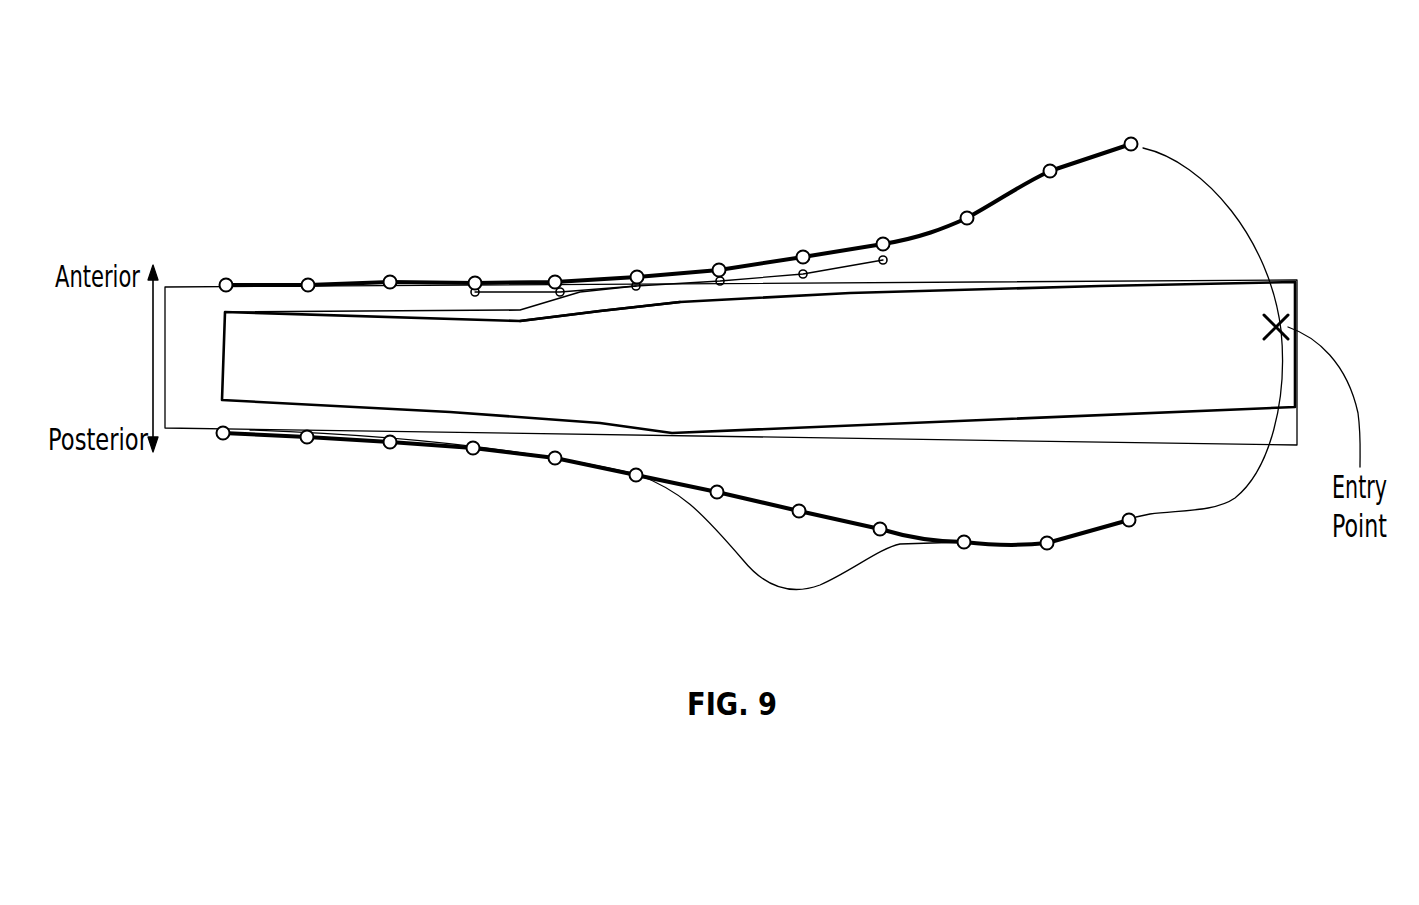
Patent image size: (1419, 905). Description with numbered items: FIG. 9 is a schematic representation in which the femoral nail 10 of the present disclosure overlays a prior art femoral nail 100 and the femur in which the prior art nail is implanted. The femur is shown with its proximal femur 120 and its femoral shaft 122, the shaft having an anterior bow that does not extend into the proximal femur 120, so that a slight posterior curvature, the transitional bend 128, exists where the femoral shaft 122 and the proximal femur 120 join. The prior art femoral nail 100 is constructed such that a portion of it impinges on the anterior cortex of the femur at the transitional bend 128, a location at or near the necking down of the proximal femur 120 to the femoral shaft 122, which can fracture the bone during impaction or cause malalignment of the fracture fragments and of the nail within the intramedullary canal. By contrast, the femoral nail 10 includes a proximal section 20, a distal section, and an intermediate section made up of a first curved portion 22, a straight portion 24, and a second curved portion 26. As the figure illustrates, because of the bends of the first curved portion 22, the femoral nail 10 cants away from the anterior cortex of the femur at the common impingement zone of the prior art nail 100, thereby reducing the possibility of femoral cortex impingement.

The femoral nail 10 is at (976, 436).
The proximal section 20 is at (1040, 288).
The first curved portion 22 is at (650, 305).
The straight portion 24 is at (577, 313).
The second curved portion 26 is at (418, 317).
The prior art femoral nail 100 is at (687, 268).
The proximal femur 120 is at (1133, 118).
The femoral shaft 122 is at (200, 285).
The transitional bend 128 is at (636, 244).